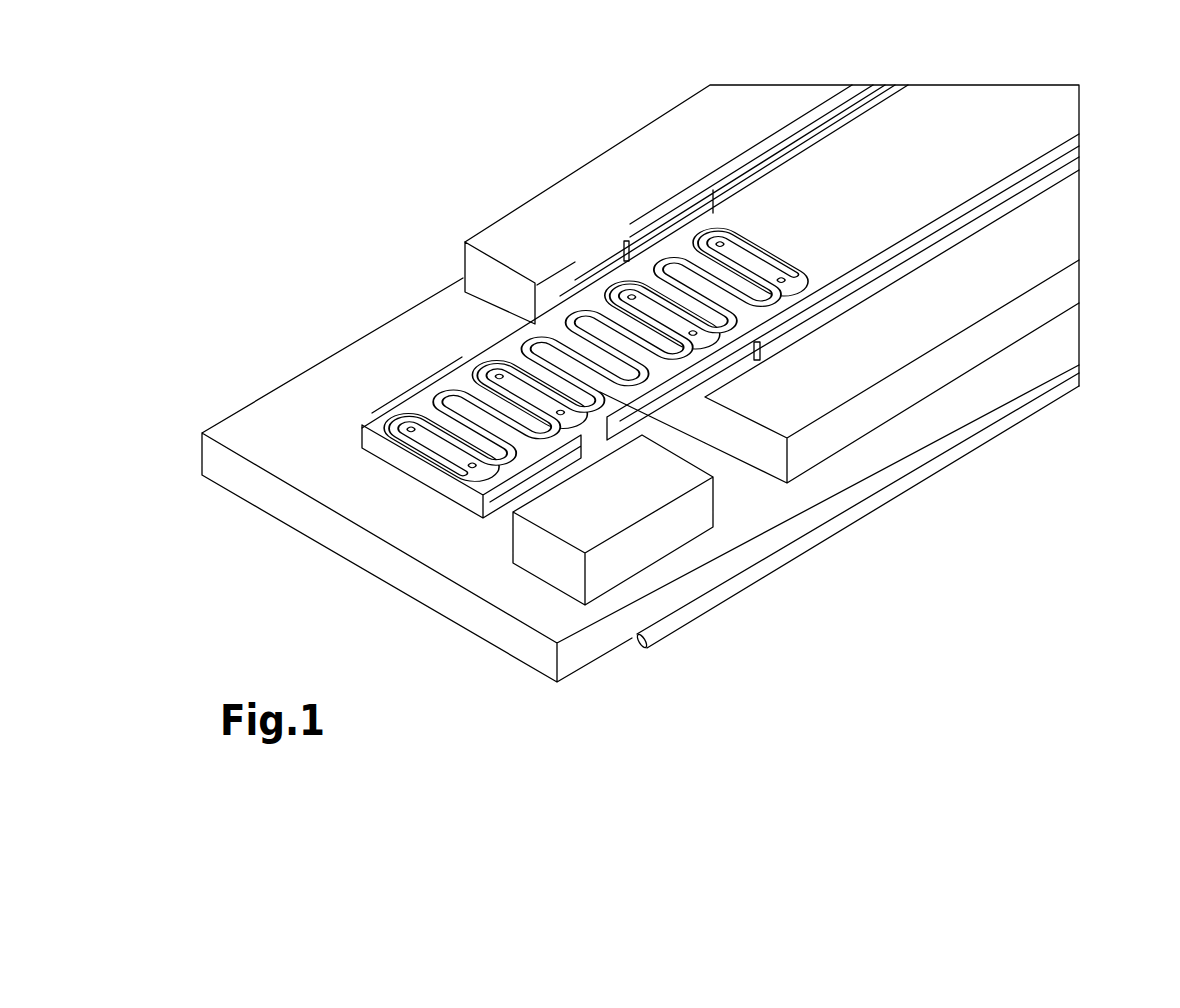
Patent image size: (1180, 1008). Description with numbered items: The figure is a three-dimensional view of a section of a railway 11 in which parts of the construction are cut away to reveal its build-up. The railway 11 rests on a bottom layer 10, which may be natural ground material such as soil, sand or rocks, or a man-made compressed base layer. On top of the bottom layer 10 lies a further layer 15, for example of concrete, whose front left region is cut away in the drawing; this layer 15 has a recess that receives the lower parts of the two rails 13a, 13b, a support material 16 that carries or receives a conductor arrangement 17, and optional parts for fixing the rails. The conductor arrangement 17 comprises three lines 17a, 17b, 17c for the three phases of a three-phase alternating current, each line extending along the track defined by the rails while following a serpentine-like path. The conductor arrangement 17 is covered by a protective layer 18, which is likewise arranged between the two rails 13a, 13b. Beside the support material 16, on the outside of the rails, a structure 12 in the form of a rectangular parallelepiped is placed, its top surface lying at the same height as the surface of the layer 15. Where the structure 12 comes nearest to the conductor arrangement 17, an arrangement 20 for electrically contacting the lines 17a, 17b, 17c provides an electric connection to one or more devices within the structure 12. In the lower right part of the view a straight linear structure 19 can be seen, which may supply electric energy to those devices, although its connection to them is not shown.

The bottom layer 10 is at (588, 657).
The railway 11 is at (1080, 587).
The structure 12 is at (650, 535).
The rail 13a is at (624, 243).
The rail 13b is at (760, 352).
The layer 15 is at (680, 148).
The support material 16 is at (428, 478).
The conductor arrangement 17 is at (648, 390).
The line 17a is at (520, 345).
The line 17b is at (657, 440).
The line 17c is at (560, 390).
The protective layer 18 is at (835, 205).
The straight linear structure 19 is at (1030, 412).
The arrangement for electrically contacting the lines 20 is at (518, 465).